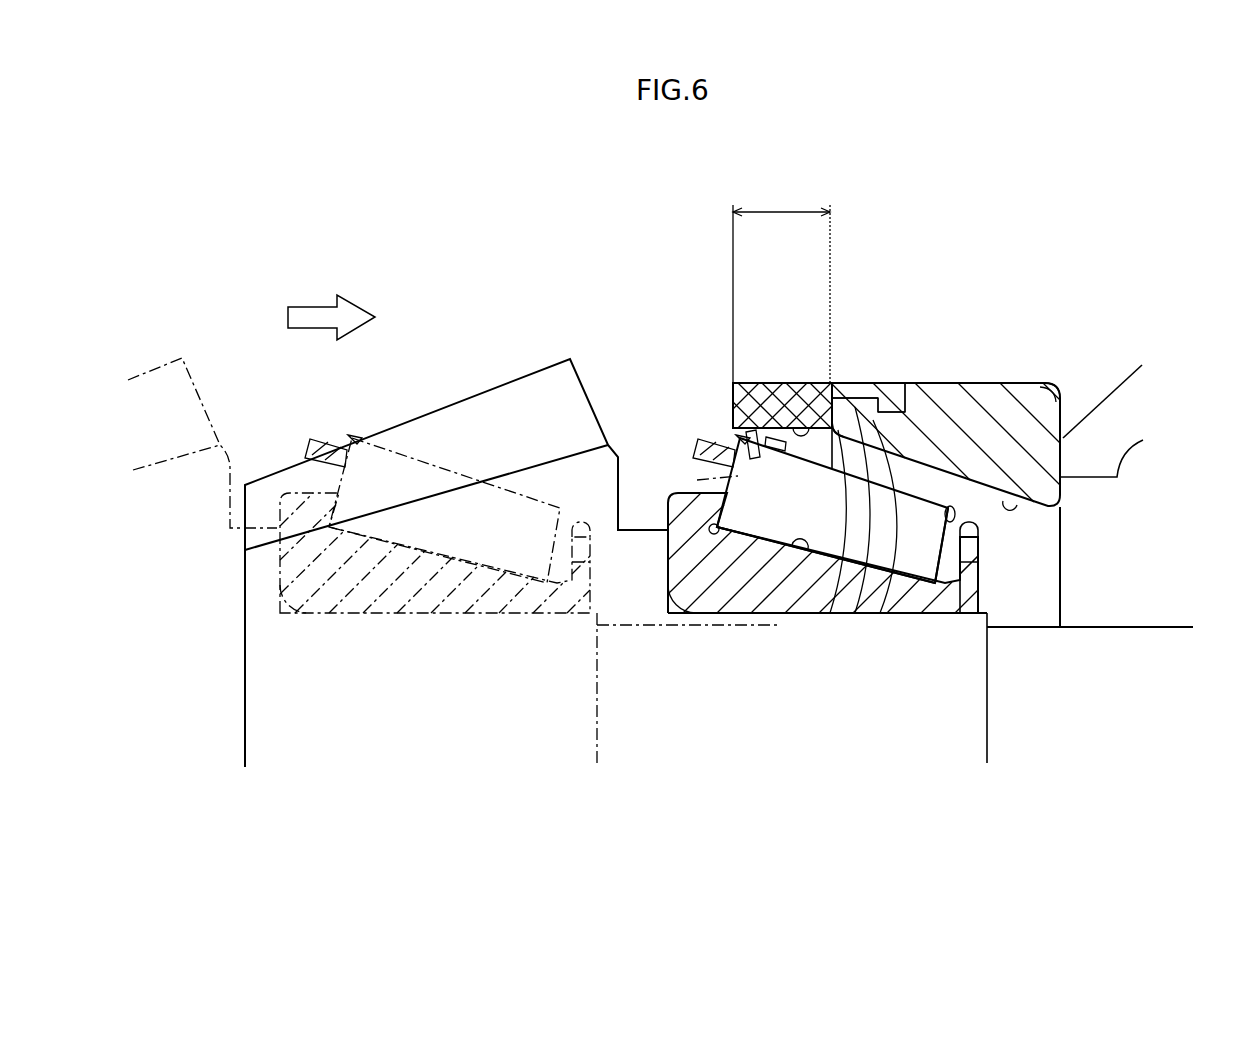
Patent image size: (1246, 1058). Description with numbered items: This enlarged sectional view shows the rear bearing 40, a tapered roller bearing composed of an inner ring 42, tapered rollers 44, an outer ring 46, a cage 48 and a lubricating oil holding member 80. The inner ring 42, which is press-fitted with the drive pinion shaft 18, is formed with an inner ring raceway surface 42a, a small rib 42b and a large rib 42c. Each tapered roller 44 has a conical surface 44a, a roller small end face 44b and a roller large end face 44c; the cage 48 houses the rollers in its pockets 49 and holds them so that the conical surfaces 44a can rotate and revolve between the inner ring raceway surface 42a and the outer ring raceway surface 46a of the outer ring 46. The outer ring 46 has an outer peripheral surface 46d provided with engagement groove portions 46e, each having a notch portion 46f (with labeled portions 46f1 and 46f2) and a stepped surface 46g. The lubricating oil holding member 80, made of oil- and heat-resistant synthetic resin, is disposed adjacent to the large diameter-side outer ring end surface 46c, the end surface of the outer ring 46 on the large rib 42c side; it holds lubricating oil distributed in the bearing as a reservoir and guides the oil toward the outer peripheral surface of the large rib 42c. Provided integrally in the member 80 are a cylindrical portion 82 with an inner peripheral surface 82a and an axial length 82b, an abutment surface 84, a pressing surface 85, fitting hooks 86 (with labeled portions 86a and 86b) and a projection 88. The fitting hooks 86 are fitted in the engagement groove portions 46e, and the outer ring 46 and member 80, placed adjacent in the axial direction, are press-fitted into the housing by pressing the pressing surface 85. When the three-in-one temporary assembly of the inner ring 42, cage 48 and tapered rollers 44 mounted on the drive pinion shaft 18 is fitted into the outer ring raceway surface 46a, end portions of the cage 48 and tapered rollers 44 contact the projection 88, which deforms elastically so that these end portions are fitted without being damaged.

The drive pinion shaft 18 is at (1148, 625).
The rear bearing 40 is at (1082, 498).
The inner ring 42 is at (827, 595).
The inner ring raceway surface 42a is at (789, 550).
The small rib 42b is at (947, 577).
The large rib 42c is at (692, 505).
The tapered rollers 44 is at (889, 553).
The conical surface 44a is at (881, 613).
The roller small end face 44b is at (962, 548).
The roller large end face 44c is at (697, 480).
The outer ring 46 is at (944, 346).
The outer ring raceway surface 46a is at (975, 347).
The large diameter-side outer ring end surface 46c is at (818, 428).
The outer peripheral surface 46d is at (1010, 383).
The engagement groove portions 46e is at (897, 410).
The notch portion 46f is at (975, 232).
The first engagement surface 46f1 is at (855, 400).
The second engagement surface 46f2 is at (897, 395).
The stepped surface 46g is at (885, 410).
The cage 48 is at (975, 530).
The pockets 49 is at (955, 508).
The lubricating oil holding member 80 is at (804, 476).
The cylindrical portion 82 is at (757, 311).
The inner peripheral surface 82a is at (787, 430).
The axial length 82b is at (755, 400).
The abutment surface 84 is at (832, 553).
The pressing surface 85 is at (733, 415).
The fitting hooks 86 is at (888, 587).
The first seal lip 86a is at (853, 613).
The second seal lip 86b is at (915, 613).
The projection 88 is at (770, 430).